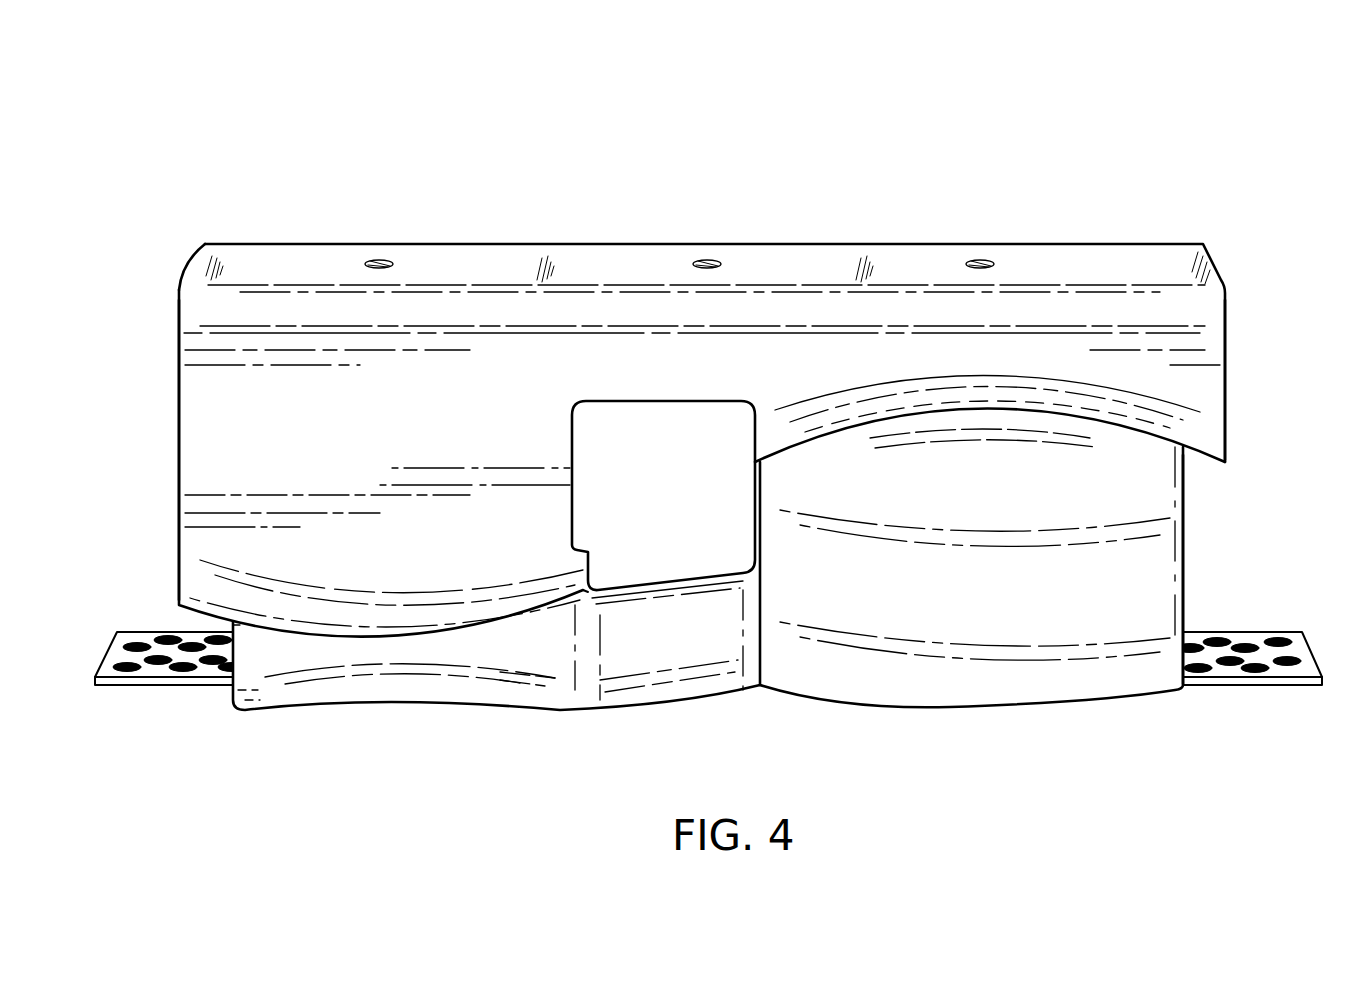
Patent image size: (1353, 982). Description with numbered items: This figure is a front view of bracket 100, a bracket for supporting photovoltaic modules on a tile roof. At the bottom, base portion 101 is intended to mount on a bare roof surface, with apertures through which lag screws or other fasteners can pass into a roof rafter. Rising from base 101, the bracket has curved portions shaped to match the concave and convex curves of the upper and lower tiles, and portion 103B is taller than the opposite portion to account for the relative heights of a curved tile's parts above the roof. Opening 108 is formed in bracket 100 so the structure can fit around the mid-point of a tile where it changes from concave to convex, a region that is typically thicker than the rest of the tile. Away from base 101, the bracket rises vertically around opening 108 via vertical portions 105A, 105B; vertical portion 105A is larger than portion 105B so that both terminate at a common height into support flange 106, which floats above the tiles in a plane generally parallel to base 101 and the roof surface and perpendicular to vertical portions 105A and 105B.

The bracket 100 is at (290, 123).
The base portion 101 is at (142, 636).
The portion 103B is at (1183, 518).
The vertical portion 105A is at (180, 445).
The vertical portion 105B is at (1225, 362).
The support flange 106 is at (458, 253).
The opening 108 is at (684, 497).